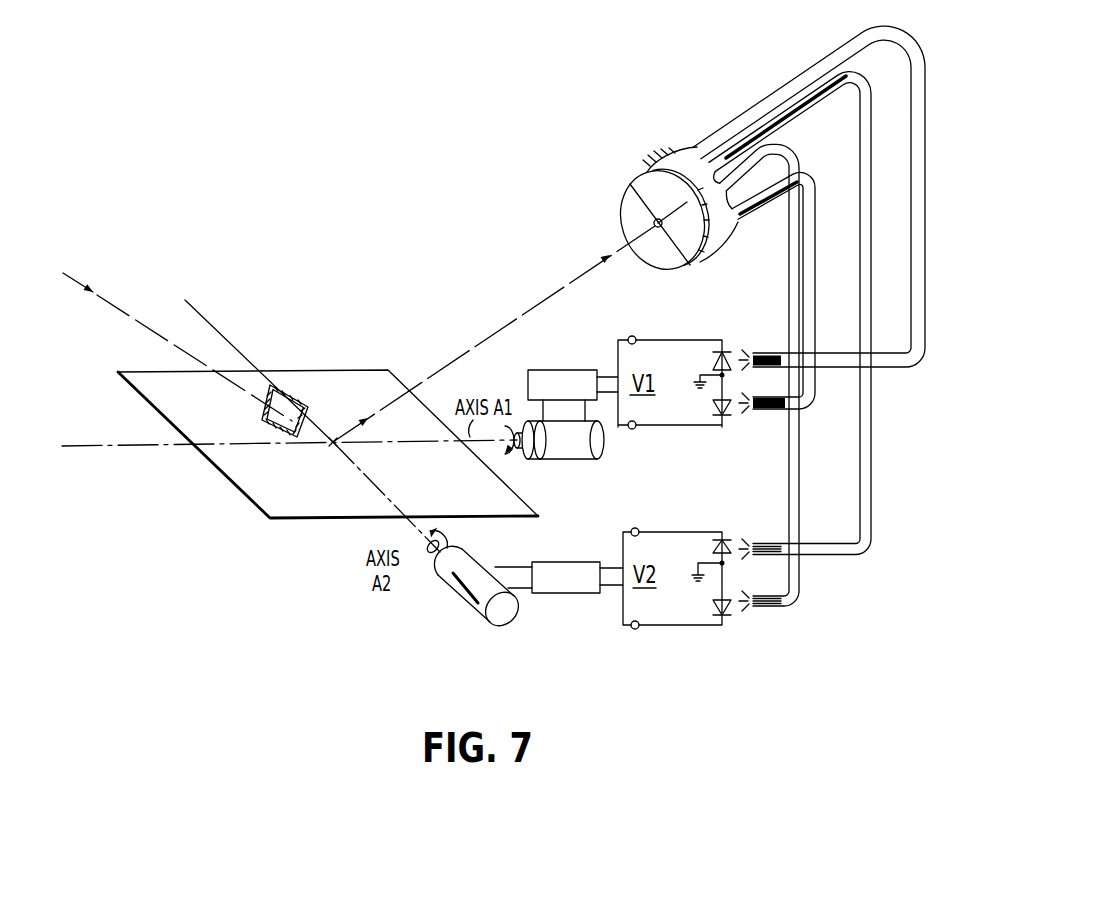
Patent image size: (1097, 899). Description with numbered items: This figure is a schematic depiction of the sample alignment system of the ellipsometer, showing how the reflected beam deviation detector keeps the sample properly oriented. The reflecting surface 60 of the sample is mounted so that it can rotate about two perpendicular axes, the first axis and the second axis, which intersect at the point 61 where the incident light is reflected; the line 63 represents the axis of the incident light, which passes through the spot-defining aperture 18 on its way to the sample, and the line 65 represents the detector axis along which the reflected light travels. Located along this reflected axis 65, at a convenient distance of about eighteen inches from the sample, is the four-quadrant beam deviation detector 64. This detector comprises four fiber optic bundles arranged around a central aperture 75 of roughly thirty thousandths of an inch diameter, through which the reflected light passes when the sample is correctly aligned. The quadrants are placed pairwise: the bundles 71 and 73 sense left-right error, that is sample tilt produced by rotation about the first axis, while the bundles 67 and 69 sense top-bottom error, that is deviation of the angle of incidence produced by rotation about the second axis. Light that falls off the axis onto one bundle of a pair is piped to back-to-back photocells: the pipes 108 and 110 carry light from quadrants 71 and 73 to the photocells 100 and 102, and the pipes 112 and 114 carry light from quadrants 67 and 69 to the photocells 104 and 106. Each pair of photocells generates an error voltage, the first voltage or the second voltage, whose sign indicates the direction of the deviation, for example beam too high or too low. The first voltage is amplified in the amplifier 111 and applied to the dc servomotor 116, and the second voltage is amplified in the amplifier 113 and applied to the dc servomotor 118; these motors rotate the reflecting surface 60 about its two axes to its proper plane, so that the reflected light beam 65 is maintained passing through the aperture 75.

The spot-defining aperture 18 is at (307, 423).
The reflecting surface 60 is at (337, 517).
The intersection point 61 is at (333, 443).
The incident light axis 63 is at (140, 321).
The four-quadrant beam deviation detector 64 is at (660, 202).
The reflected light axis 65 is at (517, 322).
The optical fiber bundle 67 is at (676, 210).
The optical fiber bundle 69 is at (667, 258).
The optical fiber bundle 71 is at (633, 223).
The optical fiber bundle 73 is at (701, 245).
The aperture 75 is at (655, 229).
The photocell 100 is at (712, 359).
The photocell 102 is at (712, 402).
The photocell 104 is at (713, 546).
The photocell 106 is at (713, 603).
The light pipe 108 is at (768, 96).
The light pipe 110 is at (811, 172).
The amplifier 111 is at (548, 372).
The light pipe 112 is at (752, 133).
The amplifier 113 is at (553, 564).
The light pipe 114 is at (793, 220).
The dc servomotor 116 is at (582, 447).
The dc servomotor 118 is at (476, 562).